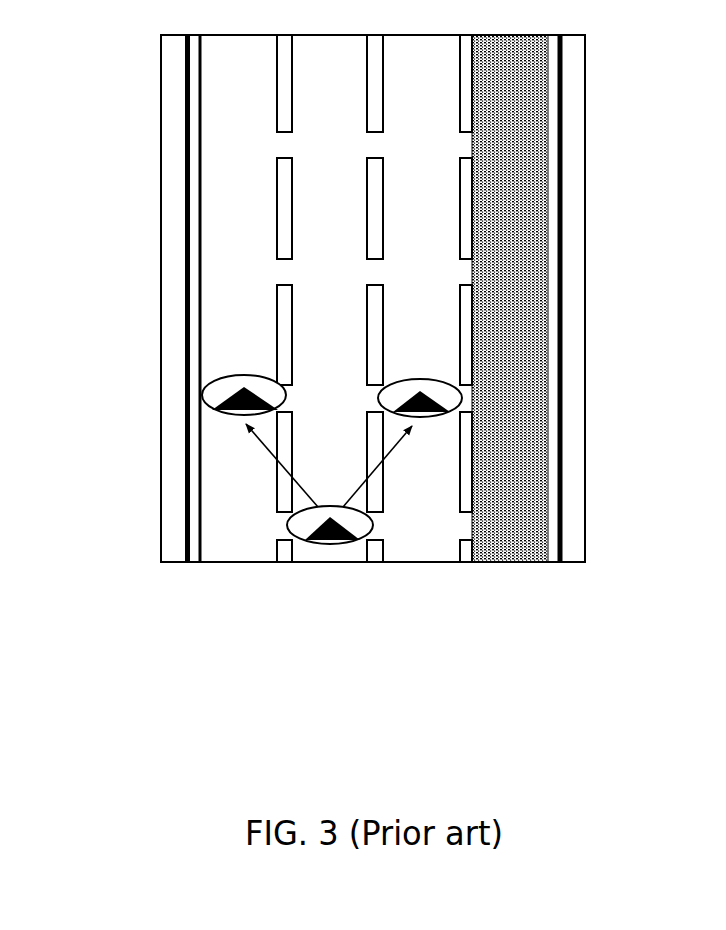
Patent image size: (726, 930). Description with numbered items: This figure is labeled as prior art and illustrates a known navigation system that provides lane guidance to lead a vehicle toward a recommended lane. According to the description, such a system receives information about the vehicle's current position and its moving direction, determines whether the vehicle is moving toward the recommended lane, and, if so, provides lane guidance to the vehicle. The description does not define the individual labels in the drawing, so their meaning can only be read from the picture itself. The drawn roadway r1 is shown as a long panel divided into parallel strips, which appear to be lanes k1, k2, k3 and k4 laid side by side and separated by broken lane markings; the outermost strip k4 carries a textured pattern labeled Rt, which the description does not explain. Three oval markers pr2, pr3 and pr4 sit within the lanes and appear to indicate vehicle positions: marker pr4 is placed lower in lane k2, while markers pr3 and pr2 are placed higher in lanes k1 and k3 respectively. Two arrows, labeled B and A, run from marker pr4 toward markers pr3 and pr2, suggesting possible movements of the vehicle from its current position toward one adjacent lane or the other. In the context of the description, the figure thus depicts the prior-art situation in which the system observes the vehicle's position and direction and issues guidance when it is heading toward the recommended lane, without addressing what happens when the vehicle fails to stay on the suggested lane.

The recording medium / track area r1 is at (170, 441).
The first track column k1 is at (223, 555).
The second track column k2 is at (325, 555).
The third track column k3 is at (425, 555).
The fourth track column k4 is at (512, 555).
The textured region Rt is at (537, 102).
The second probe position pr2 is at (461, 392).
The third probe position pr3 is at (217, 379).
The fourth probe position pr4 is at (287, 523).
The movement direction A is at (377, 466).
The movement direction B is at (279, 465).